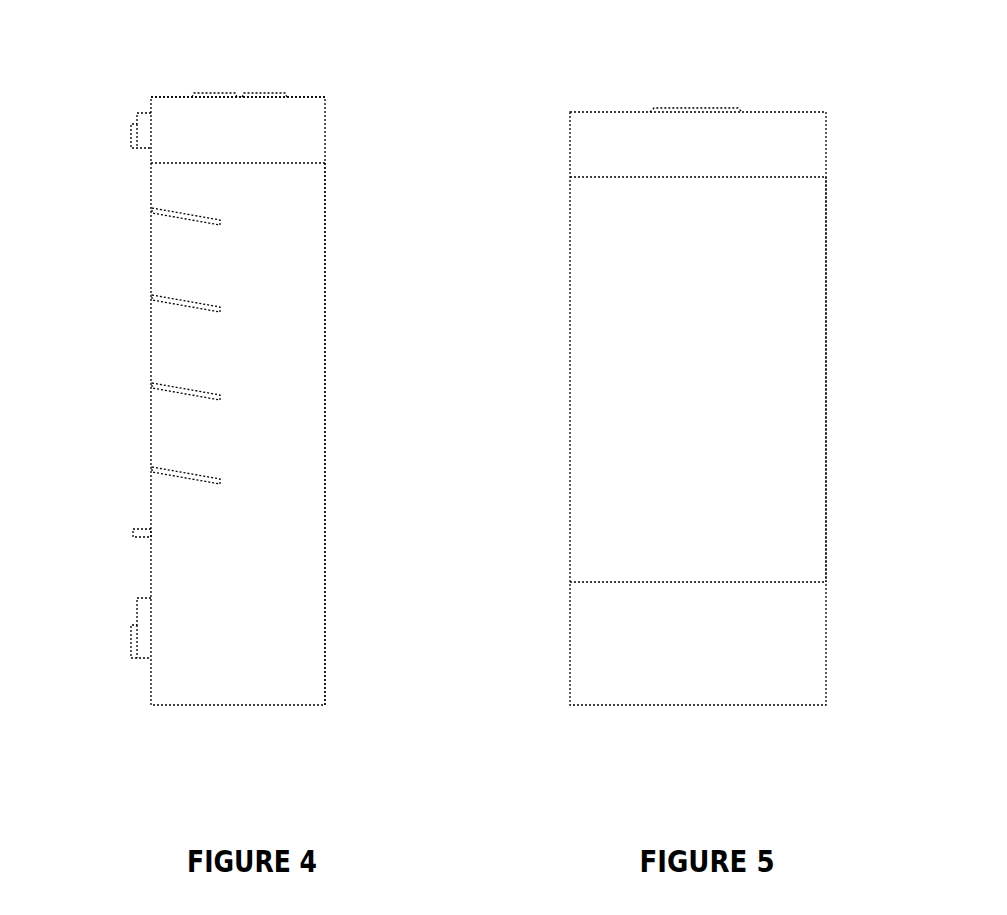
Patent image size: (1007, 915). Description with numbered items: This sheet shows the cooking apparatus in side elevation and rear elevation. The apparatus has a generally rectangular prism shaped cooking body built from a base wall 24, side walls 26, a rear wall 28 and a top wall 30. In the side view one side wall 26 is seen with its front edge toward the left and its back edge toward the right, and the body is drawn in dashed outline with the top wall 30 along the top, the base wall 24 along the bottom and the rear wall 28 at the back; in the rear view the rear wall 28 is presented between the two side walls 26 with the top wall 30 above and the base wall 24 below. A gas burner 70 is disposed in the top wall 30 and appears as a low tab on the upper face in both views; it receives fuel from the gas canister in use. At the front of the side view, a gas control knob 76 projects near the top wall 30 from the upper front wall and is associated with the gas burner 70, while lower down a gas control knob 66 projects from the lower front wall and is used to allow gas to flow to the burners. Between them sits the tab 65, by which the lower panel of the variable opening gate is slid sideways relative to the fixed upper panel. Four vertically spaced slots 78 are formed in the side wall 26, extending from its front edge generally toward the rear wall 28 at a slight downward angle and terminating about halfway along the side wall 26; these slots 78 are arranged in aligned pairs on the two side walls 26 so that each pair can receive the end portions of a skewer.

In FIG. 4, the base wall 24 is at (588, 708).
In FIG. 5, the base wall 24 is at (698, 408).
In FIG. 4, the side walls 26 is at (572, 382).
In FIG. 5, the side walls 26 is at (826, 400).
In FIG. 4, the rear wall 28 is at (588, 240).
In FIG. 4, the top wall 30 is at (578, 112).
In FIG. 4, the tab 65 is at (150, 532).
In FIG. 4, the gas control knob 66 is at (143, 640).
In FIG. 4, the gas burner 70 is at (219, 96).
In FIG. 5, the gas burner 70 is at (678, 110).
In FIG. 4, the gas control knob 76 is at (142, 133).
In FIG. 4, the slots 78 is at (153, 298).